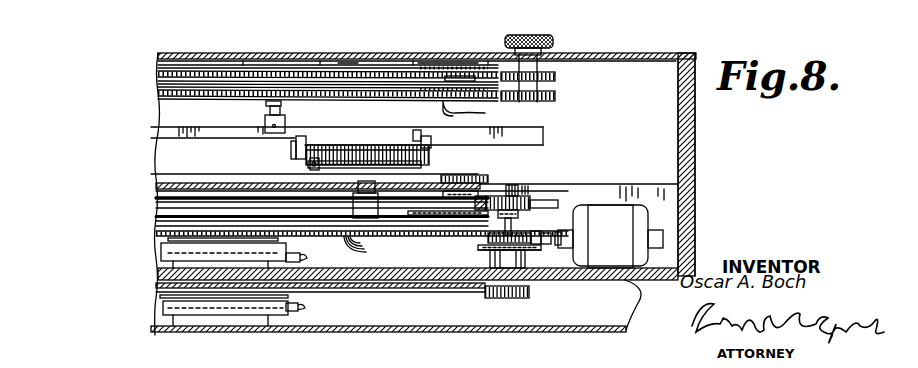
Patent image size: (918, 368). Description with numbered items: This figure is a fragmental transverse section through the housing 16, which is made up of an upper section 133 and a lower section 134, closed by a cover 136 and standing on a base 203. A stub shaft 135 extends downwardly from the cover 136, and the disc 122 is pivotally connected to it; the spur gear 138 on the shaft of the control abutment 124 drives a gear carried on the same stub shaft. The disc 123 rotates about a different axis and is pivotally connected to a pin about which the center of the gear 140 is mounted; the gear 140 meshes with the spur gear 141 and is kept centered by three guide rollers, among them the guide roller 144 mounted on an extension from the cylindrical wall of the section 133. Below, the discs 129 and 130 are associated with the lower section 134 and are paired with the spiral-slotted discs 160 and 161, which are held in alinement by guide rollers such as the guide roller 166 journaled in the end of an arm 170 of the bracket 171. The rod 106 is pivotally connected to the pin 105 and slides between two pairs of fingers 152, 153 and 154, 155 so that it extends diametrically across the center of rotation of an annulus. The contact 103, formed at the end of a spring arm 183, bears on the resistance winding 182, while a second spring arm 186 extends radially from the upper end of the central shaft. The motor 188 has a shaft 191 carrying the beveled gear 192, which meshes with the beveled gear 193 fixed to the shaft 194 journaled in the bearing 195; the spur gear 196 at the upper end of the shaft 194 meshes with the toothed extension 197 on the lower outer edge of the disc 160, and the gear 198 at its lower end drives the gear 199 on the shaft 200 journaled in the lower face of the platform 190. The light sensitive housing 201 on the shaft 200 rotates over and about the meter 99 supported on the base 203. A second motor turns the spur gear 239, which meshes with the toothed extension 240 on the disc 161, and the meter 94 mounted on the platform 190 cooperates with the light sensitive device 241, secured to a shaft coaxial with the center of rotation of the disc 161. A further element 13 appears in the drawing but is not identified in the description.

The rack 13 is at (152, 66).
The housing 16 is at (687, 147).
The meter 94 is at (152, 252).
The meter 99 is at (223, 308).
The contact 103 is at (307, 155).
The pin 105 is at (258, 97).
The rod 106 is at (190, 117).
The disc 122 is at (338, 37).
The disc 123 is at (357, 78).
The control abutment 124 is at (547, 20).
The disc 129 is at (198, 166).
The disc 130 is at (162, 195).
The upper section 133 is at (703, 110).
The lower section 134 is at (687, 200).
The stub shaft 135 is at (220, 52).
The cover 136 is at (658, 40).
The spur gear 138 is at (543, 65).
The gear 140 is at (152, 86).
The spur gear 141 is at (547, 87).
The guide roller 144 is at (435, 95).
The finger 152 is at (297, 137).
The finger 153 is at (285, 137).
The finger 154 is at (410, 140).
The finger 155 is at (412, 133).
The disc 160 is at (152, 177).
The disc 161 is at (152, 208).
The guide roller 166 is at (450, 172).
The arm 170 is at (507, 178).
The bracket 171 is at (607, 182).
The resistance winding 182 is at (368, 140).
The spring arm 183 is at (337, 147).
The spring arm 186 is at (370, 157).
The motor 188 is at (610, 236).
The platform 190 is at (615, 278).
The shaft 191 is at (567, 238).
The beveled gear 192 is at (548, 236).
The beveled gear 193 is at (483, 245).
The shaft 194 is at (477, 238).
The bearing 195 is at (503, 260).
The spur gear 196 is at (517, 192).
The toothed extension 197 is at (503, 177).
The gear 198 is at (490, 283).
The gear 199 is at (330, 282).
The shaft 200 is at (152, 283).
The light sensitive housing 201 is at (152, 300).
The base 203 is at (275, 324).
The spur gear 239 is at (513, 227).
The toothed extension 240 is at (383, 233).
The light sensitive device 241 is at (140, 243).